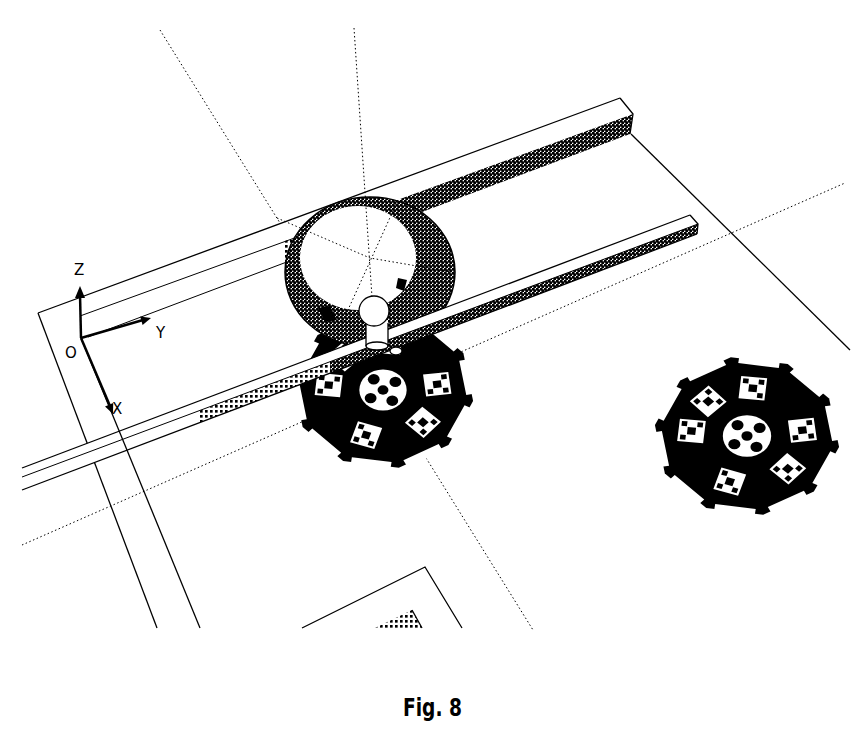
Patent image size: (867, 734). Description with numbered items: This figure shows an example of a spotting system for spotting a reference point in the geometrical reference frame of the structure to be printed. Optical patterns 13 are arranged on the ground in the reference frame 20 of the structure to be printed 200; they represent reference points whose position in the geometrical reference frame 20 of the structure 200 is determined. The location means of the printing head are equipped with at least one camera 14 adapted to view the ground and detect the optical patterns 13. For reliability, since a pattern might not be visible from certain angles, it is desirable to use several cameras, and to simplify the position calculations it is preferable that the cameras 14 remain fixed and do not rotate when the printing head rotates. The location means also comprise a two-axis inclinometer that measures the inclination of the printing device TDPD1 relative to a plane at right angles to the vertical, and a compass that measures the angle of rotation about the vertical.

The optical patterns 13 is at (662, 448).
The camera 14 is at (400, 280).
The reference frame 20 is at (111, 328).
The structure to be printed 200 is at (480, 157).
The printing device TDPD1 is at (334, 232).